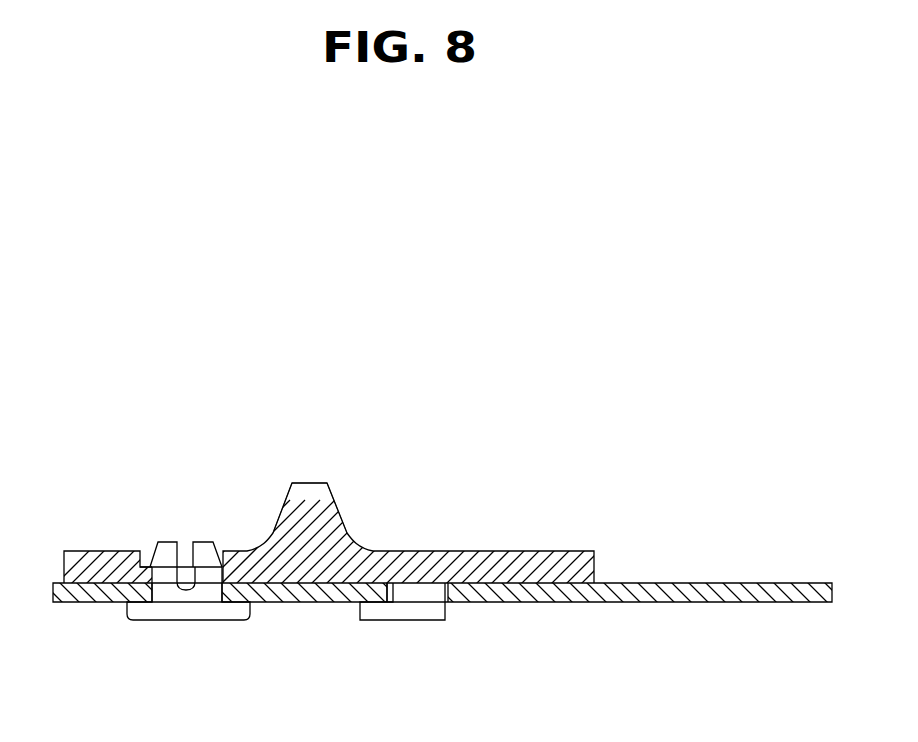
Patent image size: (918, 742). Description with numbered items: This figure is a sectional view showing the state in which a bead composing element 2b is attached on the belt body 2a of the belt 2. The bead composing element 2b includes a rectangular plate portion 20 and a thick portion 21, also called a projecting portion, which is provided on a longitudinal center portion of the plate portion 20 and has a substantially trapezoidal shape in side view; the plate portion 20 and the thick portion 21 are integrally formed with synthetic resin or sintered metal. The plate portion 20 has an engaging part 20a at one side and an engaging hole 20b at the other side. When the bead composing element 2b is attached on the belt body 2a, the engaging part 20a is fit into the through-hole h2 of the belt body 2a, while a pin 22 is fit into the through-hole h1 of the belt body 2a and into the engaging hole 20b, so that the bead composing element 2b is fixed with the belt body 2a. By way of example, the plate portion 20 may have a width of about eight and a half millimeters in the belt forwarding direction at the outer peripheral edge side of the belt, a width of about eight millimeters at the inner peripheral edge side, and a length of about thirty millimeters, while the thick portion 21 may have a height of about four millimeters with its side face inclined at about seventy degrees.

The belt 2 is at (703, 288).
The belt body 2a is at (652, 582).
The bead composing element 2b is at (545, 338).
The plate portion 20 is at (500, 553).
The thick portion 21 is at (308, 490).
The engaging part 20a is at (397, 620).
The engaging hole 20b is at (219, 576).
The pin 22 is at (167, 620).
The through-hole h1 is at (151, 592).
The through-hole h2 is at (446, 593).